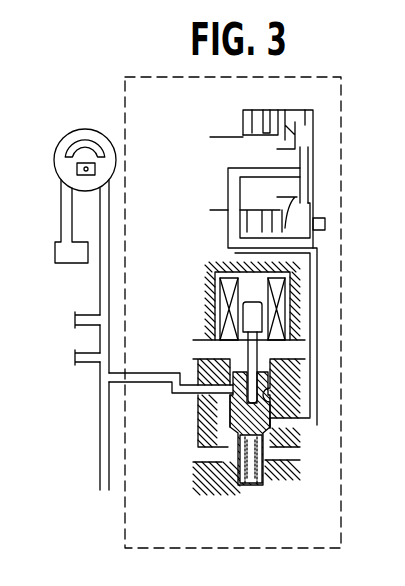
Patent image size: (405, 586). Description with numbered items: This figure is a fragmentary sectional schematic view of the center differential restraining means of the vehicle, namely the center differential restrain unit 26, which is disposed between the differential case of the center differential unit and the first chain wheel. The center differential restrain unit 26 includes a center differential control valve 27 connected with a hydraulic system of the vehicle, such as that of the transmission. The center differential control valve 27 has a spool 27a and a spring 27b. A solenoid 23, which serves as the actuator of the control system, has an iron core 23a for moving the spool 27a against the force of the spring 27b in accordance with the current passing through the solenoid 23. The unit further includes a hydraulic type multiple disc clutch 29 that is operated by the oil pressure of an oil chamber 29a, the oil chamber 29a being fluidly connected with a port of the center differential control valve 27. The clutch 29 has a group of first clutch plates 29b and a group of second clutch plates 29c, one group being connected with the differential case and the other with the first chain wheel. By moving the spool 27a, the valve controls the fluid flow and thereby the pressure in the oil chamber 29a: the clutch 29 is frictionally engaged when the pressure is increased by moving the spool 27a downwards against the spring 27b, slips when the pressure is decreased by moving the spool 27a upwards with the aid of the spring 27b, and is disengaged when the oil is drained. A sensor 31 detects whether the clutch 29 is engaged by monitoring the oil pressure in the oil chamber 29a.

The solenoid 23 is at (217, 302).
The iron core 23a is at (245, 347).
The center differential restrain unit 26 is at (348, 139).
The center differential control valve 27 is at (247, 449).
The spool 27a is at (272, 460).
The spring 27b is at (240, 475).
The hydraulic type multiple disc clutch 29 is at (237, 164).
The oil chamber 29a is at (303, 120).
The first clutch plates 29b is at (255, 136).
The second clutch plates 29c is at (253, 128).
The sensor 31 is at (325, 224).